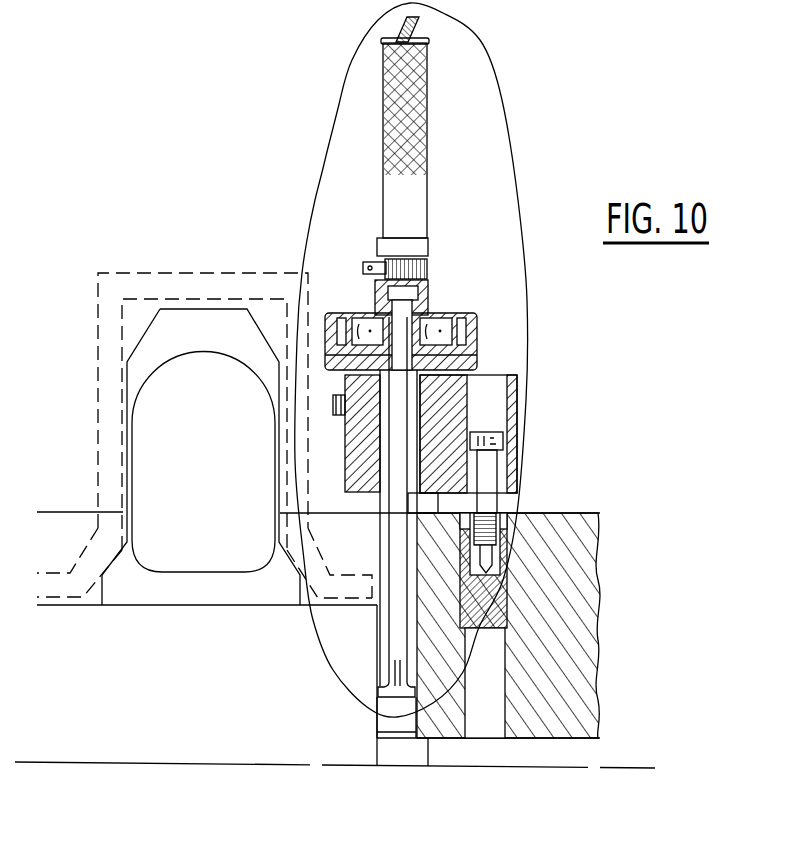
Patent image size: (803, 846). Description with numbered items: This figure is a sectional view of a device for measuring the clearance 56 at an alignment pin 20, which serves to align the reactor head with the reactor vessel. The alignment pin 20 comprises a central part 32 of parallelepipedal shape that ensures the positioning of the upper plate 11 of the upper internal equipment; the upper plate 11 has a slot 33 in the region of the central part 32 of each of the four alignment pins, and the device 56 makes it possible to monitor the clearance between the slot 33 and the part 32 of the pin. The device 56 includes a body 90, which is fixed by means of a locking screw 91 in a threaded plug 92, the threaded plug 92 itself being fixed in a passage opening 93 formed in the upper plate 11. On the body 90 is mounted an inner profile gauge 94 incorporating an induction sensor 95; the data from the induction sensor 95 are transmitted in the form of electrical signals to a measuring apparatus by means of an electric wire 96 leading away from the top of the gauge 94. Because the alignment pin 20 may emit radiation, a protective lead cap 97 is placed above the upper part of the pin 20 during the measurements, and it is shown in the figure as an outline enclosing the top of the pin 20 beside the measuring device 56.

The upper plate 11 is at (584, 618).
The alignment pin 20 is at (135, 465).
The central part 32 is at (106, 643).
The slot 33 is at (412, 727).
The device for measuring the clearance 56 is at (511, 137).
The body 90 is at (458, 396).
The locking screw 91 is at (488, 486).
The threaded plug 92 is at (507, 561).
The passage opening 93 is at (508, 667).
The inner profile gauge 94 is at (416, 212).
The induction sensor 95 is at (415, 690).
The electric wire 96 is at (416, 27).
The protective lead cap 97 is at (110, 316).